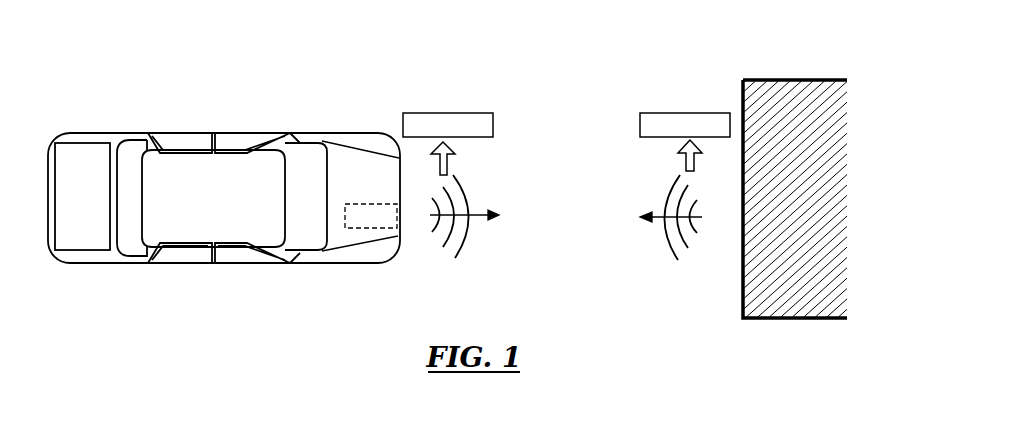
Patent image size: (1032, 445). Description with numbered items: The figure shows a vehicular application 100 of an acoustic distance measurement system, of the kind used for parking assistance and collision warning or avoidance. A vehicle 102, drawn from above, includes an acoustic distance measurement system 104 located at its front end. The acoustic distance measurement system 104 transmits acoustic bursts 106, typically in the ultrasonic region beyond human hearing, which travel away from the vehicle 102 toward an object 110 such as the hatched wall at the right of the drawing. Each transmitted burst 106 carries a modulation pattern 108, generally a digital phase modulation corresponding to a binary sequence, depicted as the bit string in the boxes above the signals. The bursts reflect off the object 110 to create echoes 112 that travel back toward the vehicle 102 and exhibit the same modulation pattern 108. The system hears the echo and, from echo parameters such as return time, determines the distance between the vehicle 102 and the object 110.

The vehicular application 100 is at (182, 58).
The vehicle 102 is at (272, 264).
The acoustic distance measurement system 104 is at (372, 229).
The acoustic burst 106 is at (464, 254).
The modulation pattern 108 is at (457, 113).
The object 110 is at (817, 80).
The echo 112 is at (677, 259).